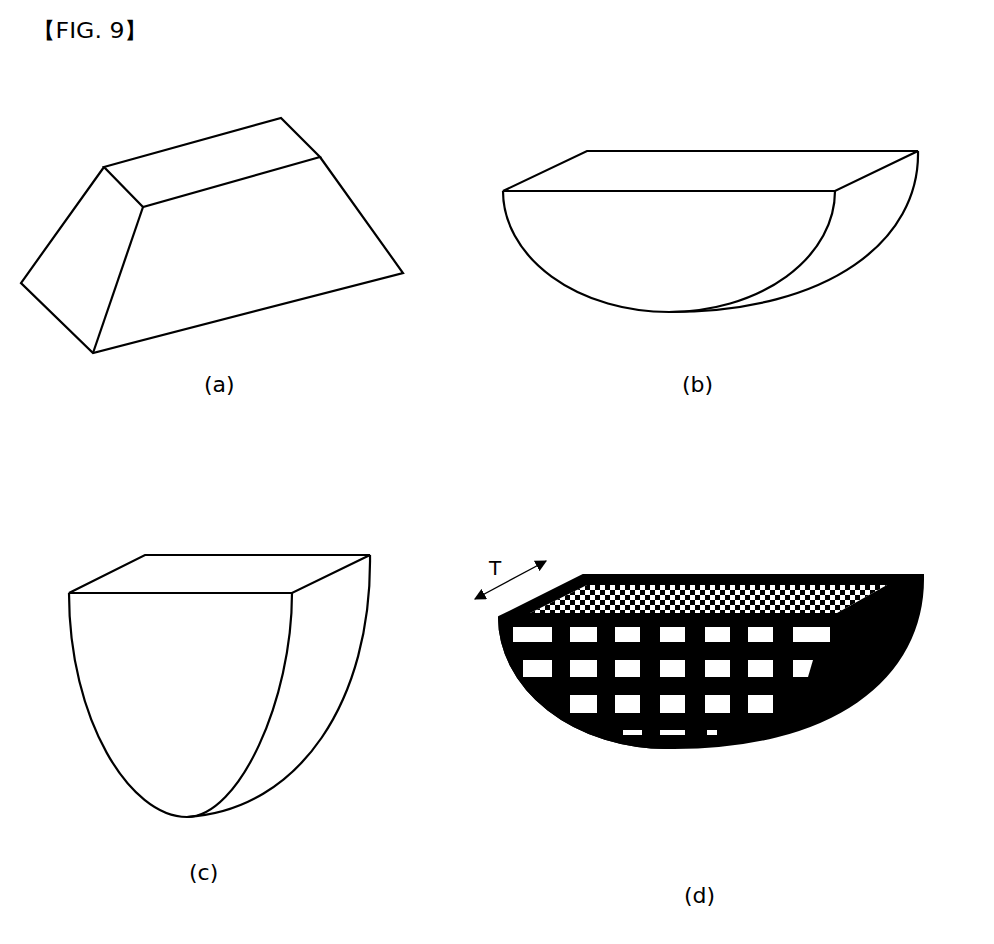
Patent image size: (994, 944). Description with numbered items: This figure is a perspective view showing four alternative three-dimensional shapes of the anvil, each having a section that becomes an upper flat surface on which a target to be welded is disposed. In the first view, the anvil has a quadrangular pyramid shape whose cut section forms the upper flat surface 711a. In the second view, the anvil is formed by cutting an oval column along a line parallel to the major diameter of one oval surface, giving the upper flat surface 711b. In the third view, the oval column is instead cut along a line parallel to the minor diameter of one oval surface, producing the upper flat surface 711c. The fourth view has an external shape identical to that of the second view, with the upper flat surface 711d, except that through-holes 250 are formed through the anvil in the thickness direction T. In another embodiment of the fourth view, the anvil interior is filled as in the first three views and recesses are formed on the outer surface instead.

The upper flat surface 711a is at (223, 157).
The upper flat surface 711b is at (717, 168).
The upper flat surface 711c is at (240, 570).
The upper flat surface 711d is at (732, 575).
The through-holes 250 is at (612, 738).